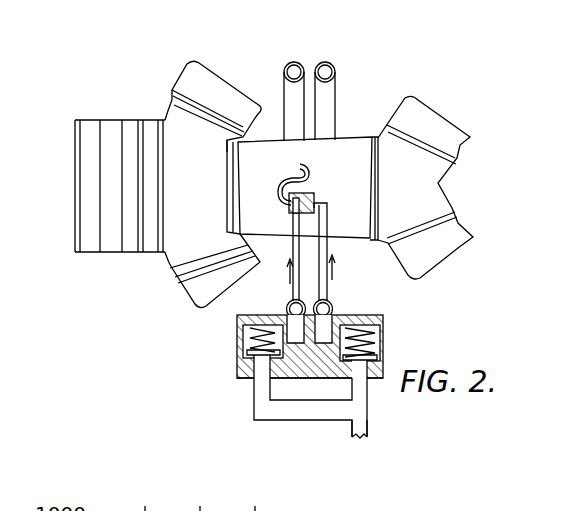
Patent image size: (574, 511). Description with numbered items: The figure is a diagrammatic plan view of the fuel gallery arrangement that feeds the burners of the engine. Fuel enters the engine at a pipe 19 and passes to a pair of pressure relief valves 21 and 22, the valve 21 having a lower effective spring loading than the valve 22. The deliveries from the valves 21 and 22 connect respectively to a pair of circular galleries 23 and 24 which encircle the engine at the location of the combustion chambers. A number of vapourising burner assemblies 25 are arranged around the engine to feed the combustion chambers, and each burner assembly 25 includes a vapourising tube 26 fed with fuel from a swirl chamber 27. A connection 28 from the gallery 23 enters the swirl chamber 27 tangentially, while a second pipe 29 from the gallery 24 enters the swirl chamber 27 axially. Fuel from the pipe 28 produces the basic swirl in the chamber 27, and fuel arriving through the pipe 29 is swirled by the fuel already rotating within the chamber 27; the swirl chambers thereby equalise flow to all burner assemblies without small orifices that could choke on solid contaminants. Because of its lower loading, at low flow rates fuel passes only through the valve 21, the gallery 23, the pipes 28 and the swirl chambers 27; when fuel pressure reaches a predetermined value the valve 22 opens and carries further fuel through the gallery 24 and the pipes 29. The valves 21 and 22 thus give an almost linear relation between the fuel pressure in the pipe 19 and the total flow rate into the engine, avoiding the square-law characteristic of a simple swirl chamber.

The pipe 19 is at (370, 428).
The pressure relief valve 21 is at (243, 342).
The pressure relief valve 22 is at (383, 333).
The circular gallery 23 is at (284, 71).
The circular gallery 24 is at (337, 70).
The vapourising burner assembly 25 is at (300, 164).
The vapourising tube 26 is at (310, 170).
The swirl chamber 27 is at (308, 191).
The connection 28 is at (289, 296).
The second pipe 29 is at (327, 217).